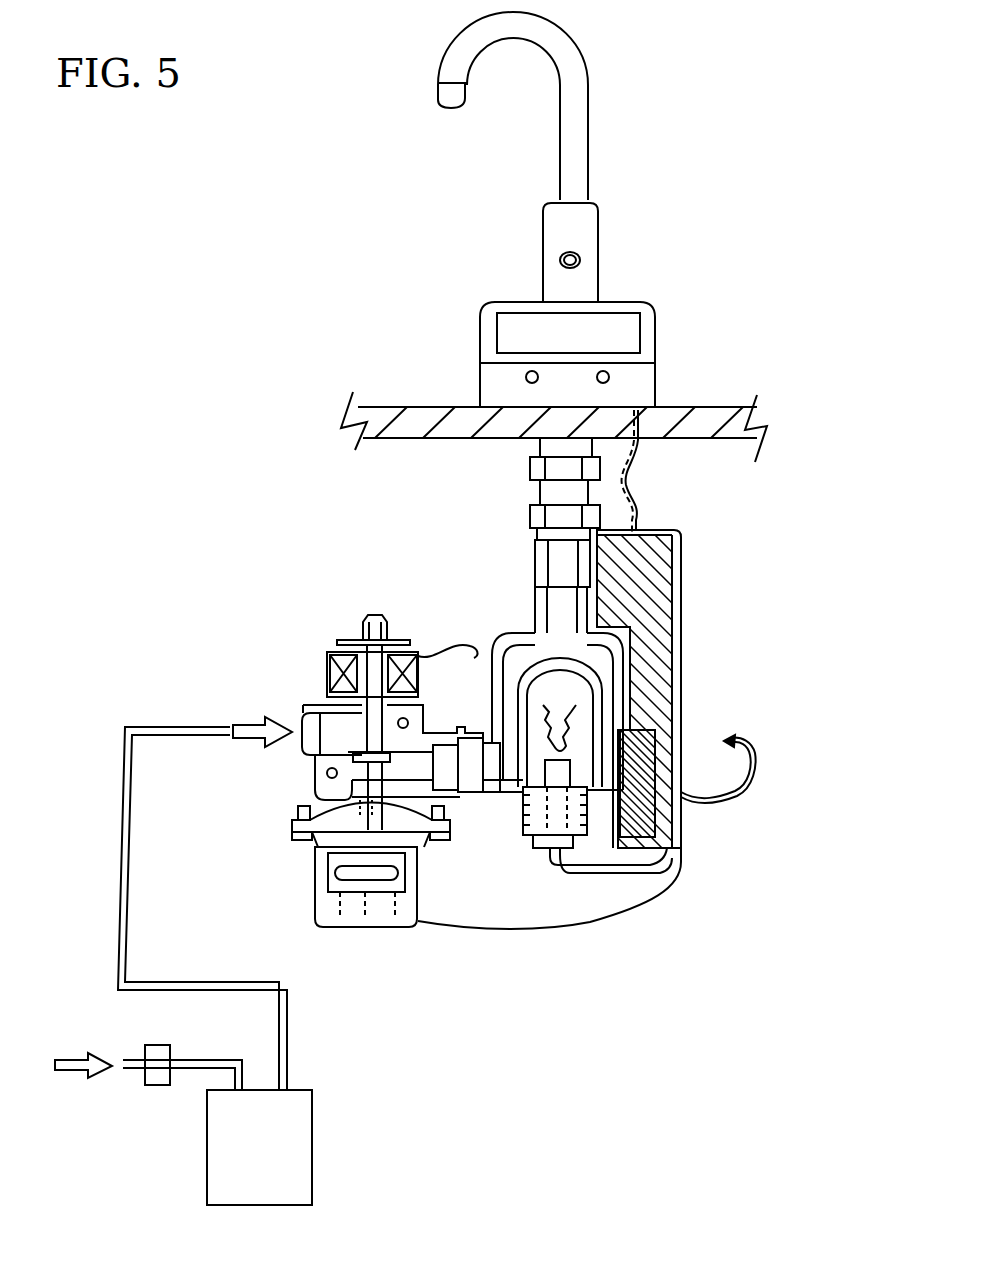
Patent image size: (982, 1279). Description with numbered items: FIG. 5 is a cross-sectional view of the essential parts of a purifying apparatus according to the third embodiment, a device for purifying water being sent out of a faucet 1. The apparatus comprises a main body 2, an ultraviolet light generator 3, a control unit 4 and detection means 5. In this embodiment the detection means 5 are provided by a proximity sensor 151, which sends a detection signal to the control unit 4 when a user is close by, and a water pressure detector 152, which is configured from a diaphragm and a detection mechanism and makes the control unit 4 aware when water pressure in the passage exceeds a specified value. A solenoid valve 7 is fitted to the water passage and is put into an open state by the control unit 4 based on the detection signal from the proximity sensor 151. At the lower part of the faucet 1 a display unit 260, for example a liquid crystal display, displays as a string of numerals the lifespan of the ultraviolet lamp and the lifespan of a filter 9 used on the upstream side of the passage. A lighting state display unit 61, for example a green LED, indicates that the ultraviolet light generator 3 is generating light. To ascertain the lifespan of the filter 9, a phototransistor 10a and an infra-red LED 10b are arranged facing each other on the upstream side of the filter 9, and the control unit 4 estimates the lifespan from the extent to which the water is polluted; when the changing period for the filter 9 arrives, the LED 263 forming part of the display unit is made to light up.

The faucet 1 is at (589, 82).
The proximity sensor 151 is at (580, 258).
The water pressure detector 152 is at (318, 852).
The detection means 5 is at (469, 588).
The display unit 260 is at (525, 332).
The LED 263 is at (609, 377).
The lighting state display unit 61 is at (526, 377).
The main body 2 is at (515, 640).
The ultraviolet light generator 3 is at (522, 739).
The control unit 4 is at (681, 621).
The solenoid valve 7 is at (347, 643).
The phototransistor 10a is at (170, 1057).
The infra-red LED 10b is at (140, 1078).
The filter 9 is at (312, 1125).